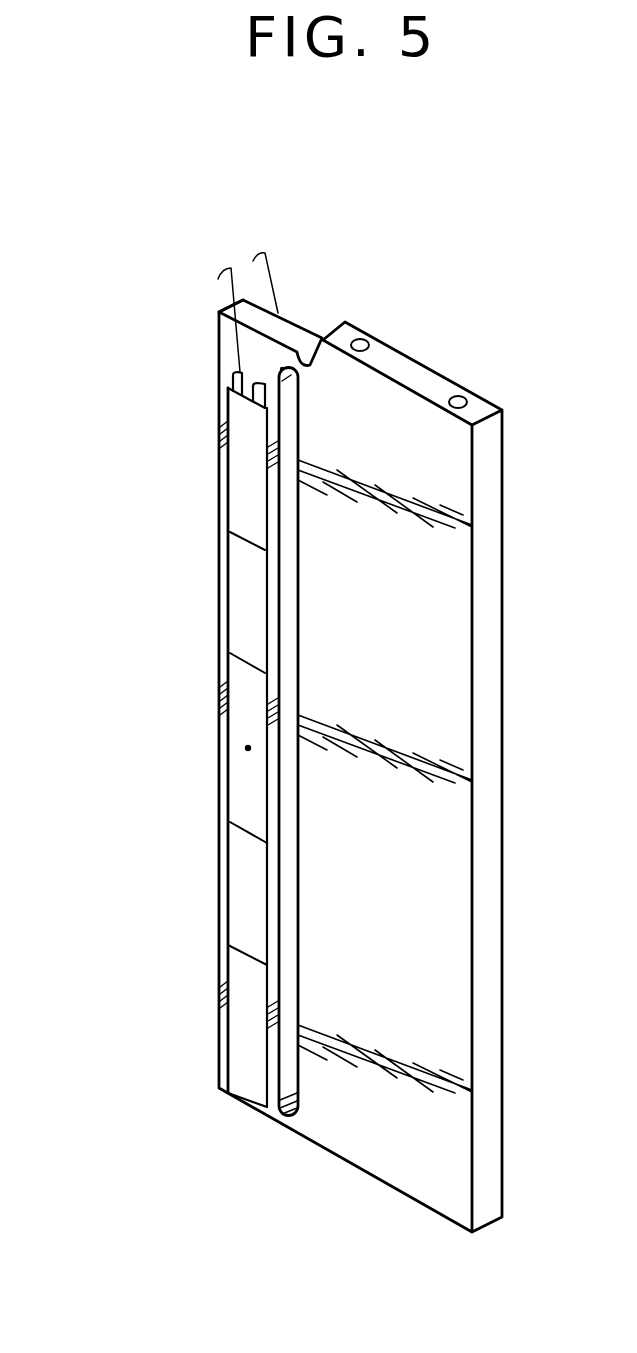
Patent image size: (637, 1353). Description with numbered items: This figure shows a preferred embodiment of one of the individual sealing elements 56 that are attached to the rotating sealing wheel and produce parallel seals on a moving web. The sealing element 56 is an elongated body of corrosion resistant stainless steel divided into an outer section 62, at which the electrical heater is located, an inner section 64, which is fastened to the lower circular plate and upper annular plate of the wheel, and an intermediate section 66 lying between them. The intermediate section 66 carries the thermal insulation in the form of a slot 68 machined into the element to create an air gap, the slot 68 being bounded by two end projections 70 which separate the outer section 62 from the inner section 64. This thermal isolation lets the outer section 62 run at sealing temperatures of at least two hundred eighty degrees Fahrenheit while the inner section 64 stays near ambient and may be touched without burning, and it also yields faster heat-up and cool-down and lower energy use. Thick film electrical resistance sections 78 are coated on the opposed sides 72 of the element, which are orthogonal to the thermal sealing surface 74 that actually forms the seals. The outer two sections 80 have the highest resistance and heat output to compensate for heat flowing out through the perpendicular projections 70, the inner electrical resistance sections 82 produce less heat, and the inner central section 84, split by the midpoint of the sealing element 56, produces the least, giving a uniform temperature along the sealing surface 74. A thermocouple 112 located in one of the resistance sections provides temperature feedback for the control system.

The sealing element 56 is at (196, 678).
The outer section 62 is at (233, 374).
The inner section 64 is at (402, 1175).
The intermediate section 66 is at (267, 1003).
The thermal insulation slot 68 is at (288, 870).
The end projections 70 is at (283, 366).
The opposed sides 72 is at (228, 803).
The thermal sealing surface 74 is at (224, 310).
The electrical resistance sections 78 is at (242, 478).
The outer sections 80 is at (238, 443).
The inner electrical resistance sections 82 is at (238, 600).
The inner central section 84 is at (238, 740).
The thermocouple 112 is at (246, 750).